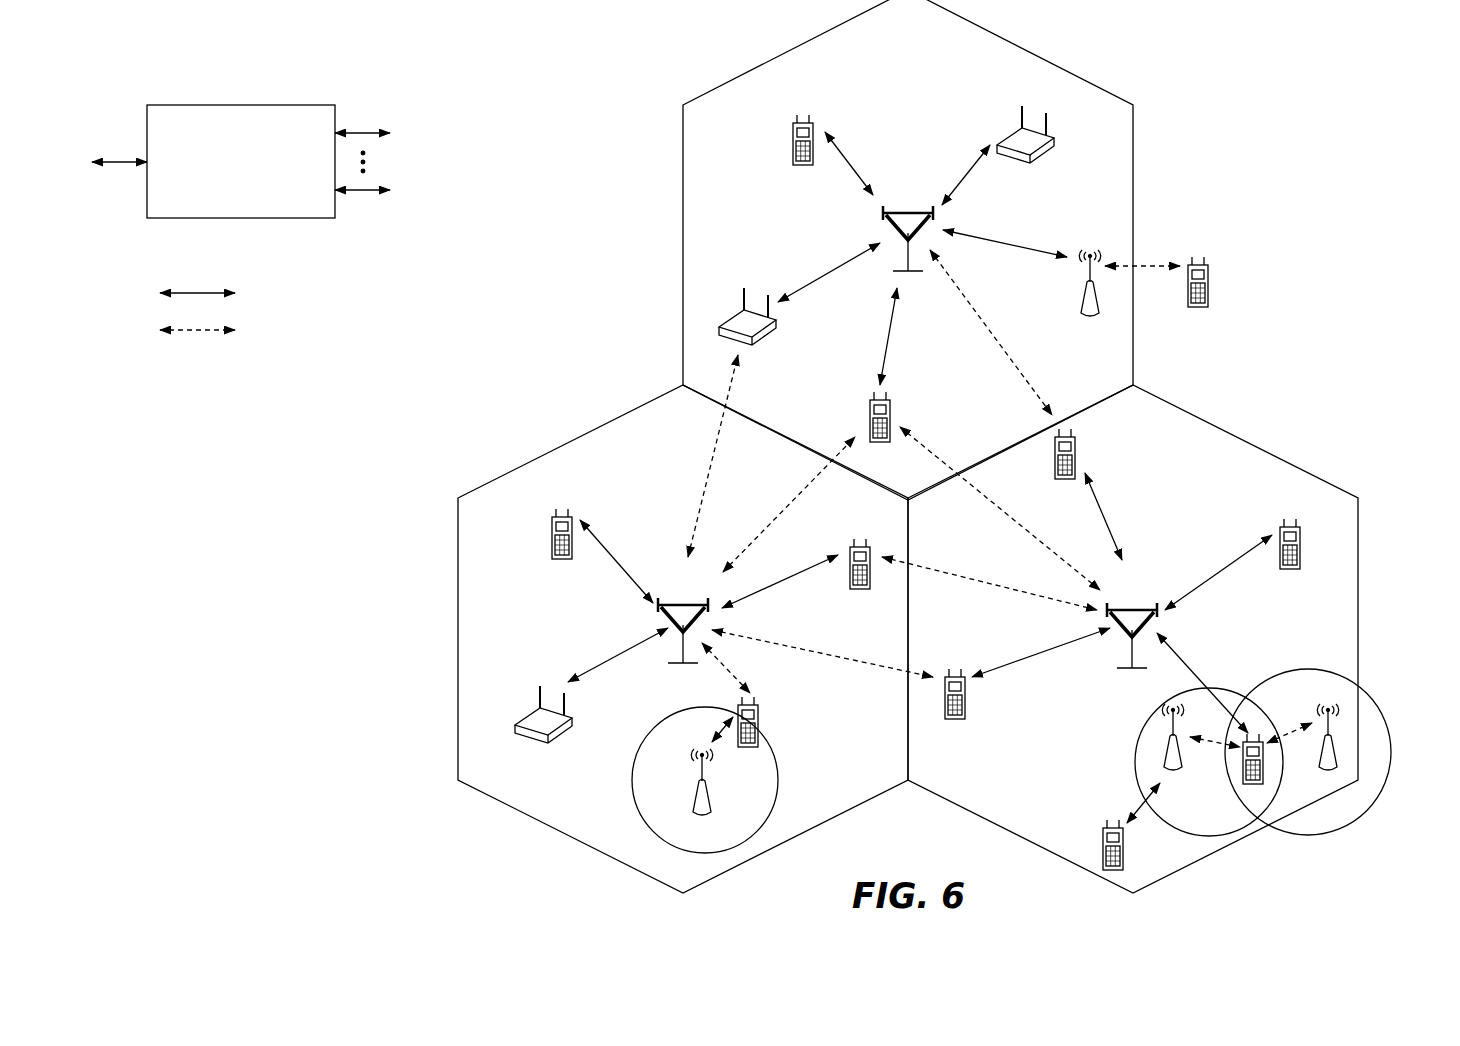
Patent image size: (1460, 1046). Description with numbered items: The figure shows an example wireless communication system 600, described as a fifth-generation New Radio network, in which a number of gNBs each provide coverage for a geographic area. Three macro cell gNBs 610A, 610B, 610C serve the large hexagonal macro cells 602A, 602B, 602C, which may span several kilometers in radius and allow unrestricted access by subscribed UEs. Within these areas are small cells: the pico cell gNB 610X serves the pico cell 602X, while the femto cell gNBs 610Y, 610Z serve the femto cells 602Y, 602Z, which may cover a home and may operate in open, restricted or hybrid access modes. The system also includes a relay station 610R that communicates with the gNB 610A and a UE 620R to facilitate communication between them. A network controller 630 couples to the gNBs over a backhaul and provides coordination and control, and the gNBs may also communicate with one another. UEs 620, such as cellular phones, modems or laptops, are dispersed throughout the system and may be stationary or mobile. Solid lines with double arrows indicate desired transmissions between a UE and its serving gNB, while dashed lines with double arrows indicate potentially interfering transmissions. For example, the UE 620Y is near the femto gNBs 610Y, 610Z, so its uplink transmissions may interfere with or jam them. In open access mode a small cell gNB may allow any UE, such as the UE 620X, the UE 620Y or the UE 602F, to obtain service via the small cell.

The wireless communication system 600 is at (1286, 66).
The network controller 630 is at (270, 90).
The macro cell 602A is at (1032, 32).
The macro cell 602B is at (571, 440).
The macro cell 602C is at (1246, 442).
The pico cell 602X is at (652, 727).
The femto cell 602Y is at (1145, 725).
The femto cell 602Z is at (1297, 669).
The UE 602F is at (1100, 831).
The macro cell gNB 610A is at (906, 211).
The macro cell gNB 610B is at (694, 604).
The macro cell gNB 610C is at (1143, 606).
The relay station 610R is at (1081, 306).
The pico cell gNB 610X is at (710, 810).
The femto cell gNB 610Y is at (1188, 773).
The femto cell gNB 610Z is at (1335, 772).
The UE 620 is at (794, 128).
The UE 620R is at (1208, 306).
The UE 620X is at (758, 722).
The UE 620Y is at (1242, 792).